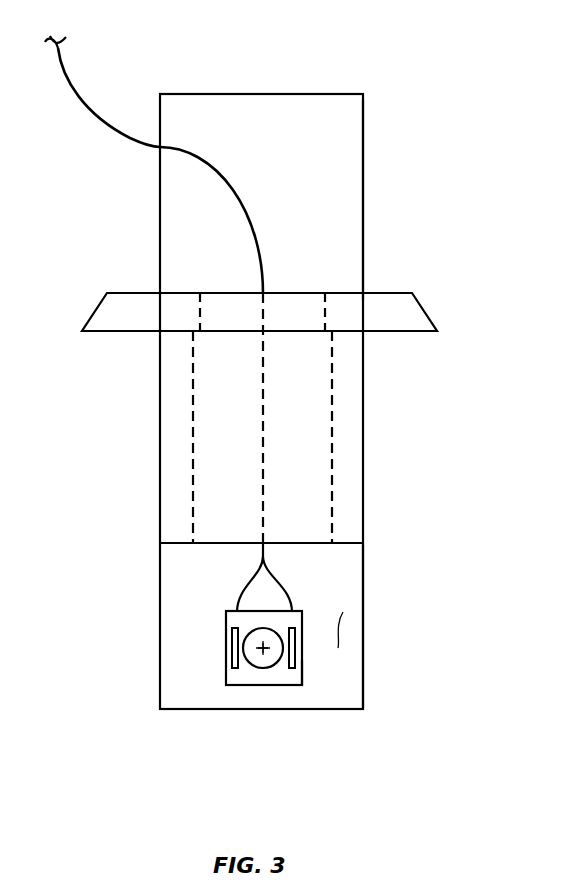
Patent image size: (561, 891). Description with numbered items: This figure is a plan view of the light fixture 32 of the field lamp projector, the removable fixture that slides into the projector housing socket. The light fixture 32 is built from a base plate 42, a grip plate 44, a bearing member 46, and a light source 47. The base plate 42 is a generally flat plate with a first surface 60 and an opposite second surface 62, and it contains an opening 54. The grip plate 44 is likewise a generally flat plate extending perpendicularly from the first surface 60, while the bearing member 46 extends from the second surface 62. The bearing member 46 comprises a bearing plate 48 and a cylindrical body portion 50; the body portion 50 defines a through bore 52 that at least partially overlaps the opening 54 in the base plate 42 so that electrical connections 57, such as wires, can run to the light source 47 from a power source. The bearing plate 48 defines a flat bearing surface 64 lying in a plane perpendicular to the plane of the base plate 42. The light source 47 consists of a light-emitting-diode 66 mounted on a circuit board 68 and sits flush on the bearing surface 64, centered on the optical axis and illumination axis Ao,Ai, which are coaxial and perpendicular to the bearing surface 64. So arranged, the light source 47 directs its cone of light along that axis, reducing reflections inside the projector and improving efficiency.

The light fixture 32 is at (307, 88).
The base plate 42 is at (413, 311).
The grip plate 44 is at (352, 168).
The bearing member 46 is at (367, 472).
The light source 47 is at (297, 690).
The bearing plate 48 is at (352, 583).
The body portion 50 is at (303, 424).
The through bore 52 is at (195, 438).
The opening 54 is at (219, 311).
The electrical connections 57 is at (70, 78).
The first surface 60 is at (382, 293).
The second surface 62 is at (405, 333).
The bearing surface 64 is at (340, 630).
The light-emitting-diode (LED) 66 is at (262, 668).
The circuit board 68 is at (250, 678).
The optical axis and illumination axis Ao,Ai is at (264, 652).